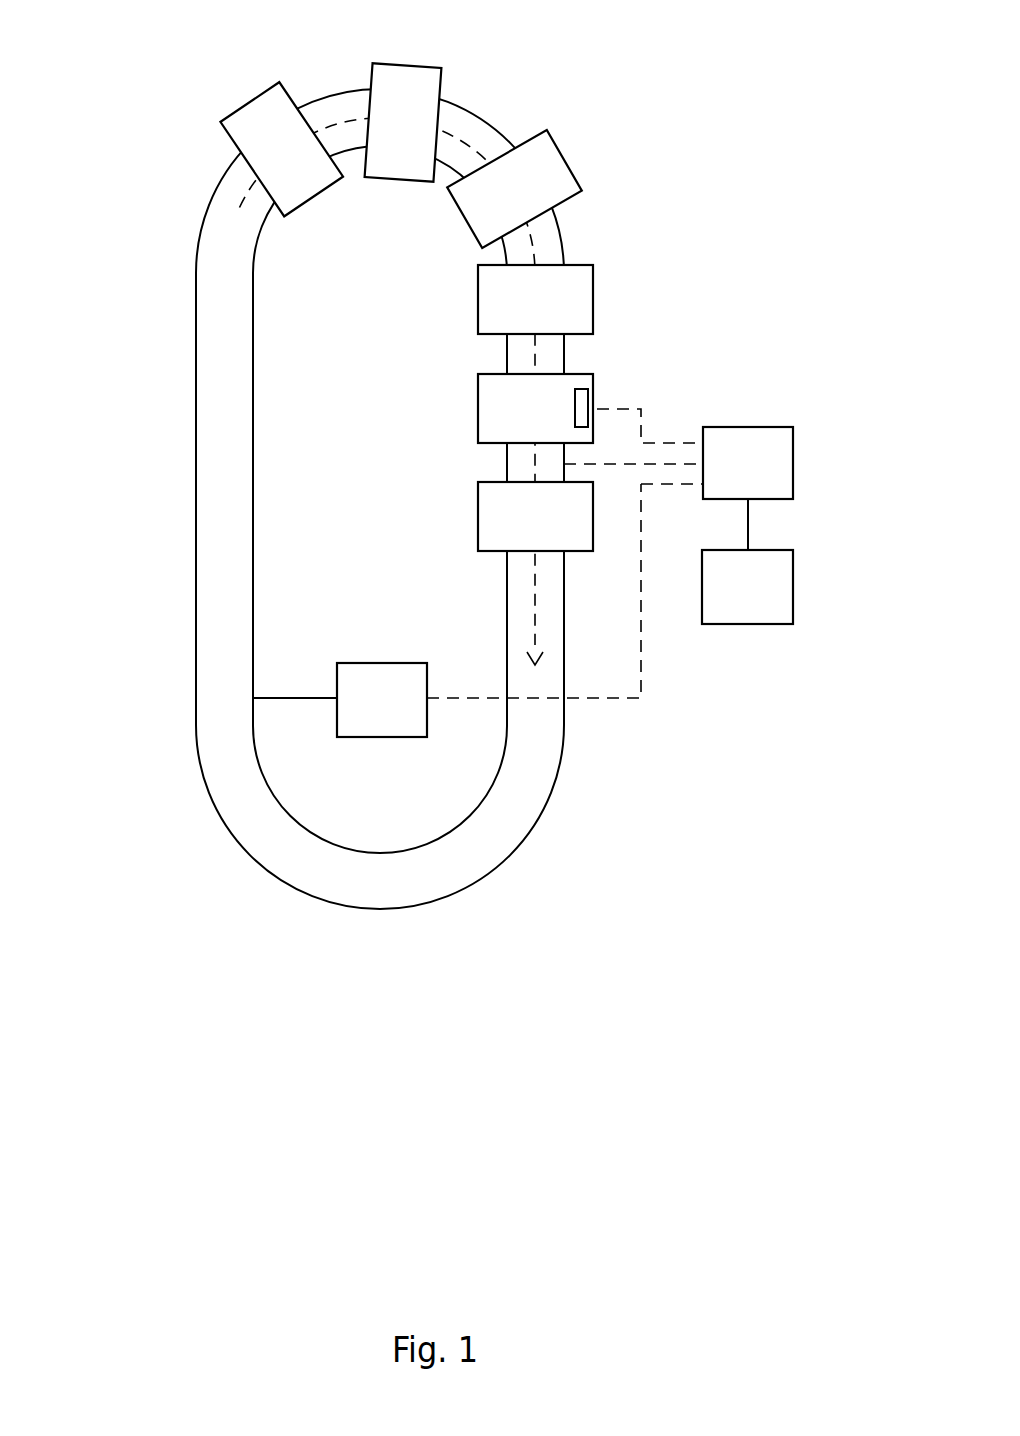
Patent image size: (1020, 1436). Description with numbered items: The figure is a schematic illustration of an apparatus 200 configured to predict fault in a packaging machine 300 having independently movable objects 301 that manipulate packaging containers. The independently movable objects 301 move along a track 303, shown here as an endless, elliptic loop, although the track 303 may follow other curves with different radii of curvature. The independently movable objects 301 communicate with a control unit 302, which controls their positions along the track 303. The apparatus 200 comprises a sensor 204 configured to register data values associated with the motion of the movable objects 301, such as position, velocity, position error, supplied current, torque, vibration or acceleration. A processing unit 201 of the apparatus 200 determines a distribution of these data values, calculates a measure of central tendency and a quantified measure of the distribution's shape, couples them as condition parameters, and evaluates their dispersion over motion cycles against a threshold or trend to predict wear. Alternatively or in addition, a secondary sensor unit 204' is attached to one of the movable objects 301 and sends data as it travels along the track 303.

The packaging machine 300 is at (152, 36).
The independently movable objects 301 is at (480, 396).
The control unit 302 is at (447, 610).
The track 303 is at (535, 610).
The secondary sensor unit 204' is at (639, 401).
The sensor 204 is at (748, 463).
The processing unit 201 is at (747, 587).
The apparatus 200 is at (802, 572).